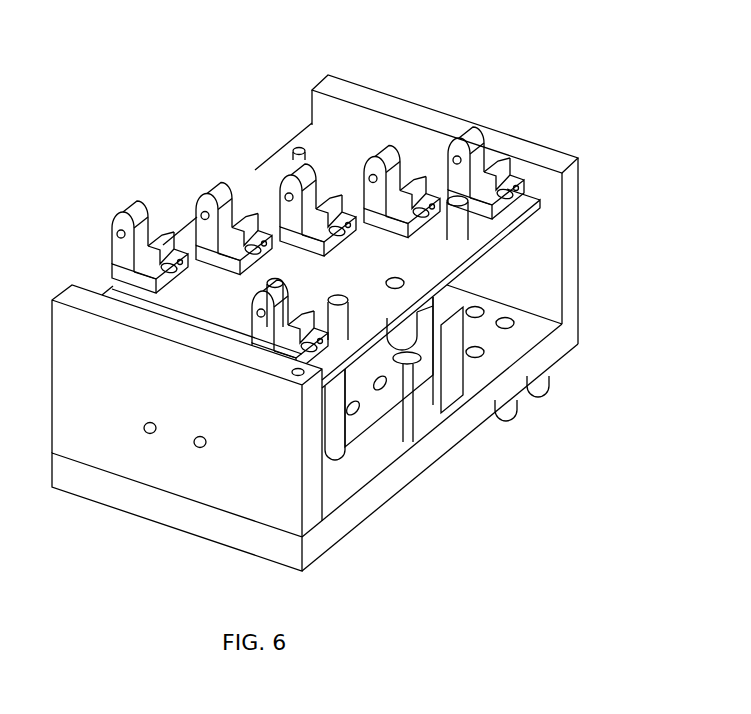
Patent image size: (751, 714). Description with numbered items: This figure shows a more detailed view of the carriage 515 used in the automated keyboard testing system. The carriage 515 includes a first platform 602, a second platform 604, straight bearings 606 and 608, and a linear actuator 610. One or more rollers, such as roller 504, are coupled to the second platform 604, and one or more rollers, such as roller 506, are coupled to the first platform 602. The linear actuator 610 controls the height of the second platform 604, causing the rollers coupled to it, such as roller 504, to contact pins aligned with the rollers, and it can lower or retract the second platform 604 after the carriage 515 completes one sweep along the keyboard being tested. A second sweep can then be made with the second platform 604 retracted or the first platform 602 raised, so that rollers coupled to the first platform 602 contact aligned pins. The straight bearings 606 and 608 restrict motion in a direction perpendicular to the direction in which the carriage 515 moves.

The carriage 515 is at (353, 19).
The first platform 602 is at (262, 176).
The roller 506 is at (387, 153).
The roller 504 is at (470, 153).
The second platform 604 is at (440, 258).
The straight bearing 606 is at (462, 301).
The straight bearing 608 is at (333, 411).
The linear actuator 610 is at (421, 379).